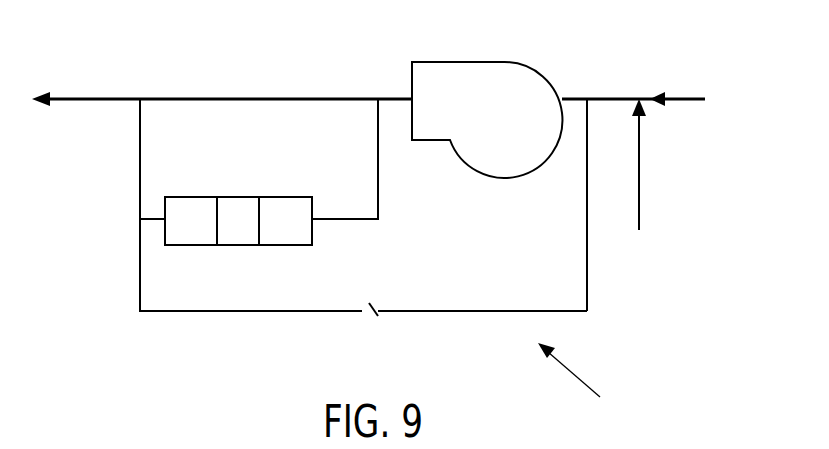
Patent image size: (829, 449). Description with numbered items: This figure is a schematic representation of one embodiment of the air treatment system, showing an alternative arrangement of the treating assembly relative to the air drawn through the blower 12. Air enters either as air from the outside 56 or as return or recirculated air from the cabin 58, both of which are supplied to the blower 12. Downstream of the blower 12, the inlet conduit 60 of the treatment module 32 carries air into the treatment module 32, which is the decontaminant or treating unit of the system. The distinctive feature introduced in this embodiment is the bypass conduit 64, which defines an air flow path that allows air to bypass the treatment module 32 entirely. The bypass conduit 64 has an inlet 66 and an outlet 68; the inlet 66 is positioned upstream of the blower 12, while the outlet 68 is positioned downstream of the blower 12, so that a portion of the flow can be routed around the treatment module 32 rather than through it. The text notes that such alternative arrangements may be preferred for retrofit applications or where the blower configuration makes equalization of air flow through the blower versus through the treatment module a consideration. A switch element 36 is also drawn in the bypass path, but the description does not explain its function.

The blower 12 is at (533, 68).
The treatment module 32 is at (265, 197).
The switch 36 is at (376, 311).
The air from the outside 56 is at (705, 99).
The return or recirculated air from the cabin 58 is at (639, 230).
The inlet conduit 60 is at (380, 178).
The bypass conduit 64 is at (600, 397).
The inlet 66 is at (587, 185).
The outlet 68 is at (140, 282).